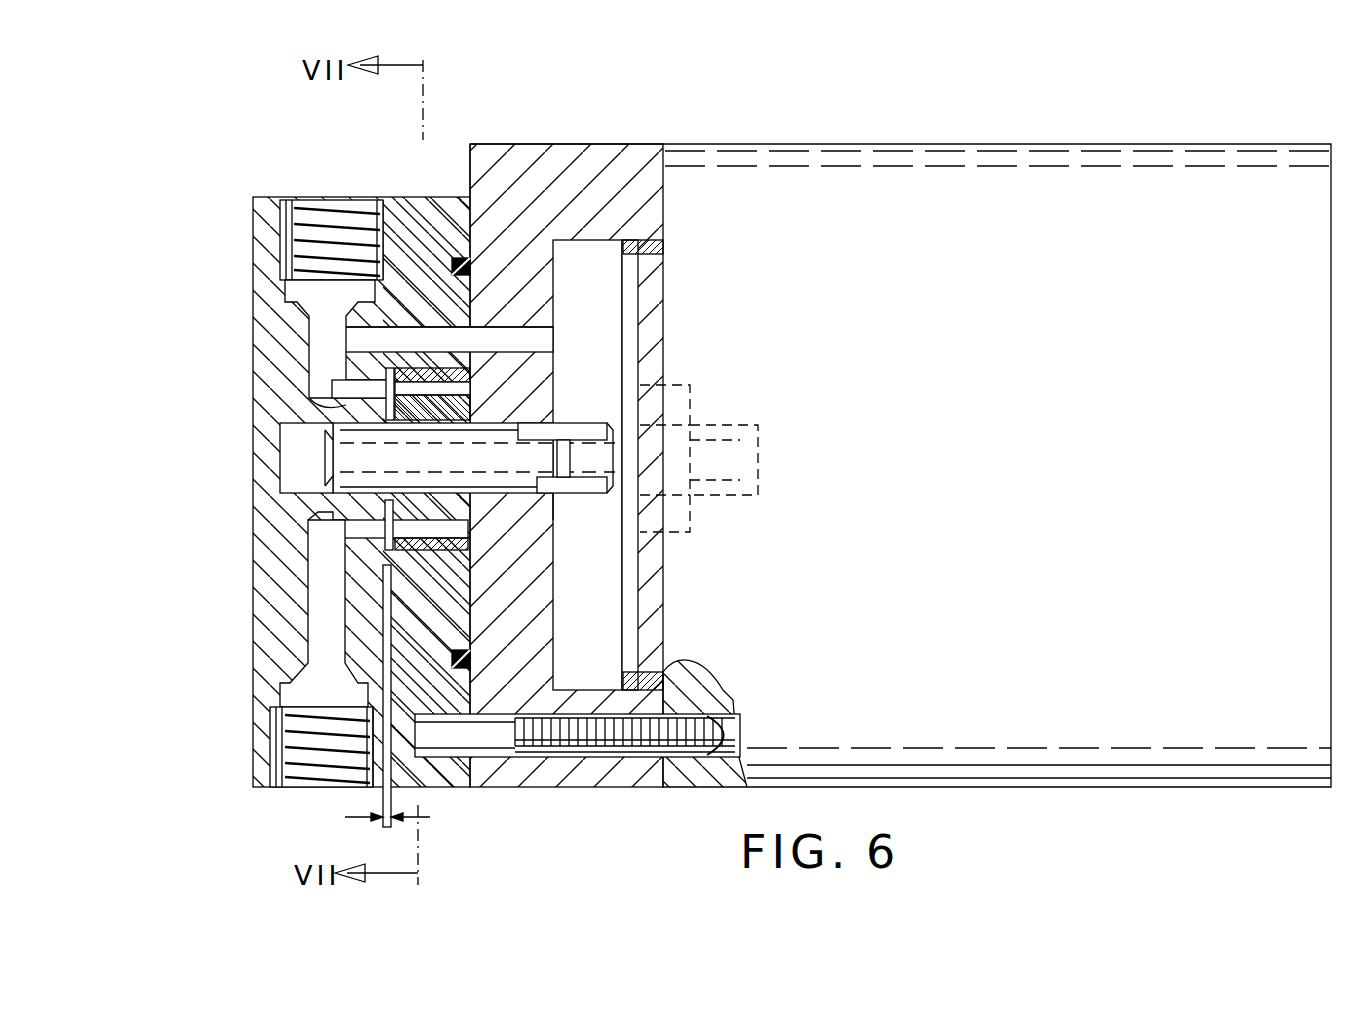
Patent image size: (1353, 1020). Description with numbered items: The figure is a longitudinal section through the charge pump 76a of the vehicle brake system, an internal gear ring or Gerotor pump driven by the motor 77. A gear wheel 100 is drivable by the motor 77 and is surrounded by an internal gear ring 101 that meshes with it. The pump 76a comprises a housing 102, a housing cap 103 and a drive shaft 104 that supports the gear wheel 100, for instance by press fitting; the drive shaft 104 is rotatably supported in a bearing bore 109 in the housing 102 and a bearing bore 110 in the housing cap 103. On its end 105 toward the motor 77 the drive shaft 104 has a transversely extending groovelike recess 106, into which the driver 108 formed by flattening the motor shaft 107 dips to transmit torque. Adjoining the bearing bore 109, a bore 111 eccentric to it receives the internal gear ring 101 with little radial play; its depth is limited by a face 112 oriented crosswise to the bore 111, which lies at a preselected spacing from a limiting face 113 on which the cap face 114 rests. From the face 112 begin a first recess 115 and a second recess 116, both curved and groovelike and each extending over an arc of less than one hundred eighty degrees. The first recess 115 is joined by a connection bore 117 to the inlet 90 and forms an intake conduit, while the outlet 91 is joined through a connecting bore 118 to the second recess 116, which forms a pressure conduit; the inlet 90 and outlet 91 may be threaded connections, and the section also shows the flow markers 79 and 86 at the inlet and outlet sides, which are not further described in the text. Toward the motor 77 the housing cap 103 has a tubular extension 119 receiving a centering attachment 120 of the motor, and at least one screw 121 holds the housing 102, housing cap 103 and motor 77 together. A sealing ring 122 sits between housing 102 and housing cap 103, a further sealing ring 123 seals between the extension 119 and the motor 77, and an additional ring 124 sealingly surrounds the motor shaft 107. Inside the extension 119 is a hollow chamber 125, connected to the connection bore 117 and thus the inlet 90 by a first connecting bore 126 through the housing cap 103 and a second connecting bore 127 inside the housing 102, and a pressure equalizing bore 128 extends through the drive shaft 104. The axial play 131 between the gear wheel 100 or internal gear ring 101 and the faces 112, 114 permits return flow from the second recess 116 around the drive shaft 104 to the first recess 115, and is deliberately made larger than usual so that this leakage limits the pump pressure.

The pump 76a is at (213, 218).
The motor 77 is at (1012, 733).
The adjusting screw 79 is at (336, 120).
The lower screw 86 is at (322, 800).
The inlet 90 is at (424, 463).
The outlet 91 is at (298, 783).
The gear wheel 100 is at (465, 407).
The internal gear ring 101 is at (386, 528).
The housing 102 is at (441, 197).
The housing cap 103 is at (522, 165).
The drive shaft 104 is at (330, 465).
The end 105 is at (630, 425).
The recess 106 is at (556, 496).
The motor shaft 107 is at (757, 426).
The driver 108 is at (600, 460).
The bearing bore 109 is at (283, 445).
The bearing bore 110 is at (600, 432).
The bore 111 is at (470, 372).
The face 112 is at (385, 545).
The limiting face 113 is at (575, 192).
The cap face 114 is at (462, 252).
The first recess 115 is at (340, 388).
The second recess 116 is at (390, 520).
The connection bore 117 is at (335, 325).
The connecting bore 118 is at (322, 622).
The tubular extension 119 is at (632, 782).
The centering attachment 120 is at (648, 622).
The screw 121 is at (492, 735).
The sealing ring 122 is at (632, 240).
The sealing ring 123 is at (663, 670).
The ring 124 is at (690, 530).
The hollow chamber 125 is at (600, 588).
The first connecting bore 126 is at (455, 345).
The second connecting bore 127 is at (458, 312).
The pressure equalizing bore 128 is at (552, 525).
The axial play 131 is at (385, 830).